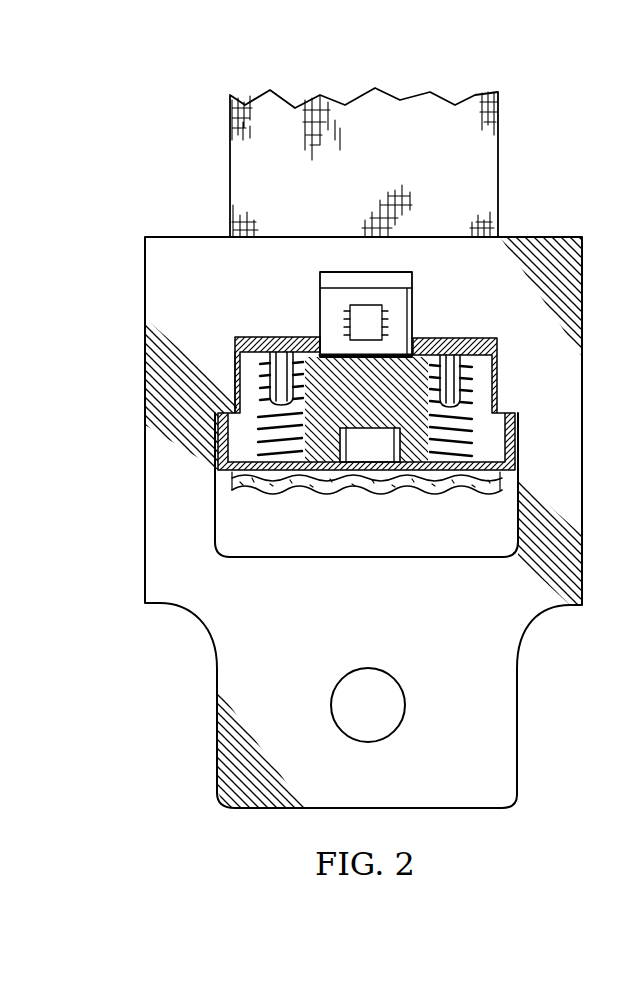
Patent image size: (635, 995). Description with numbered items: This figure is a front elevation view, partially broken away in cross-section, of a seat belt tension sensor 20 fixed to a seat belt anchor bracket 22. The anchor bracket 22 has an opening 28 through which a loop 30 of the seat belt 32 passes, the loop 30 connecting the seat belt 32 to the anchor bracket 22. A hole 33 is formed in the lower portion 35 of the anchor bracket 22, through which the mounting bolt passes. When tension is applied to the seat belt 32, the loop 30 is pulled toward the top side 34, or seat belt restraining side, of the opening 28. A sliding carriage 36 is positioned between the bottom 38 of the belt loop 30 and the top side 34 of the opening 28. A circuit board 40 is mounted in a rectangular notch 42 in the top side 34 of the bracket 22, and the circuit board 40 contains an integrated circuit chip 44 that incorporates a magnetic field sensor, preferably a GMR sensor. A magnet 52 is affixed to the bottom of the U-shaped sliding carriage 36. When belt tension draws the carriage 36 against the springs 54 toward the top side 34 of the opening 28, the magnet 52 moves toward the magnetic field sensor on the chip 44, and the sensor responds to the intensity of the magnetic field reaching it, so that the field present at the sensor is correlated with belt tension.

The seat belt tension sensor 20 is at (168, 203).
The seat belt anchor bracket 22 is at (583, 520).
The opening 28 is at (232, 385).
The loop 30 is at (422, 490).
The seat belt 32 is at (500, 152).
The hole 33 is at (333, 704).
The top side 34 is at (250, 337).
The lower portion 35 is at (485, 812).
The sliding carriage 36 is at (415, 415).
The bottom 38 is at (335, 488).
The circuit board 40 is at (413, 340).
The rectangular notch 42 is at (413, 320).
The integrated circuit chip 44 is at (472, 315).
The magnet 52 is at (380, 455).
The springs 54 is at (237, 372).